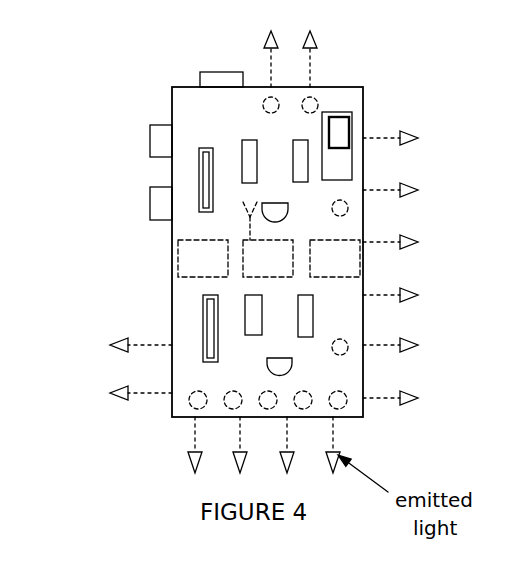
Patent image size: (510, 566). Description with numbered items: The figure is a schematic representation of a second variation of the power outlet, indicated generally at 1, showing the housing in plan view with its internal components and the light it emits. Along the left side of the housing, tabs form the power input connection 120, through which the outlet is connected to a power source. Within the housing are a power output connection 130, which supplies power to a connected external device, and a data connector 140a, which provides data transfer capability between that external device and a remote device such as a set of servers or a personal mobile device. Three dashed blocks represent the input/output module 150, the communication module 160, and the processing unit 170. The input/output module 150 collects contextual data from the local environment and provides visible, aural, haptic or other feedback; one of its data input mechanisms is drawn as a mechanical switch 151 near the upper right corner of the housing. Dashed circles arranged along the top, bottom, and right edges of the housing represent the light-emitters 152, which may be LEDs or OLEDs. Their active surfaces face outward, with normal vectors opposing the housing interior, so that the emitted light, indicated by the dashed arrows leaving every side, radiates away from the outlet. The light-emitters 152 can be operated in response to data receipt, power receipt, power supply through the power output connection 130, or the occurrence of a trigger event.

The lighting device 1 is at (341, 252).
The power input connection 120 is at (190, 82).
The mechanical switch 151 is at (363, 109).
The power output connection 130 is at (225, 302).
The data connector 140a is at (187, 334).
The input/output module 150 is at (203, 258).
The communication module 160 is at (268, 258).
The processing unit 170 is at (335, 258).
The light-emitters 152 is at (354, 368).